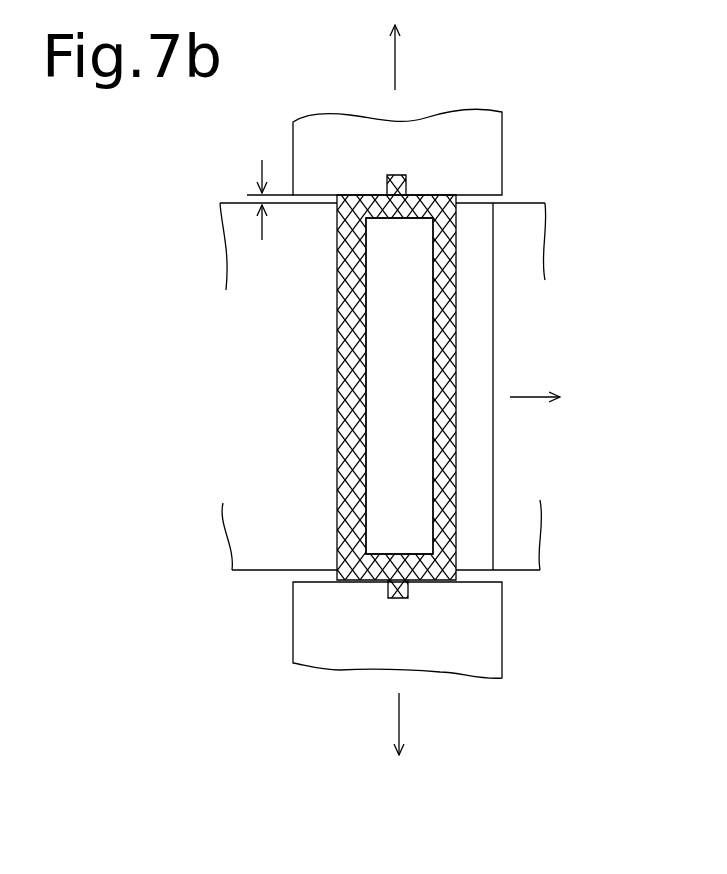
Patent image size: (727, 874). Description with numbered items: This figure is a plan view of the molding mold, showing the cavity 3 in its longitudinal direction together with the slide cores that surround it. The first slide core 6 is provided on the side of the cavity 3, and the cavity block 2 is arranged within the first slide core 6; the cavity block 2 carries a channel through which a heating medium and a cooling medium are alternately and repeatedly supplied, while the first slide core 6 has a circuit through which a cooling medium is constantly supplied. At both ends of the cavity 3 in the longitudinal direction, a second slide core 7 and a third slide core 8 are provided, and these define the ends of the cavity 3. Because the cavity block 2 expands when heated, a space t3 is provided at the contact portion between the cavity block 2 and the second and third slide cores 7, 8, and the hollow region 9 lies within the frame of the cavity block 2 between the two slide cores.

The cavity block 2 is at (477, 237).
The cavity 3 is at (340, 527).
The first slide core 6 is at (530, 250).
The second slide core 7 is at (502, 133).
The third slide core 8 is at (480, 657).
The cavity 9 is at (412, 463).
The space t3 is at (261, 200).